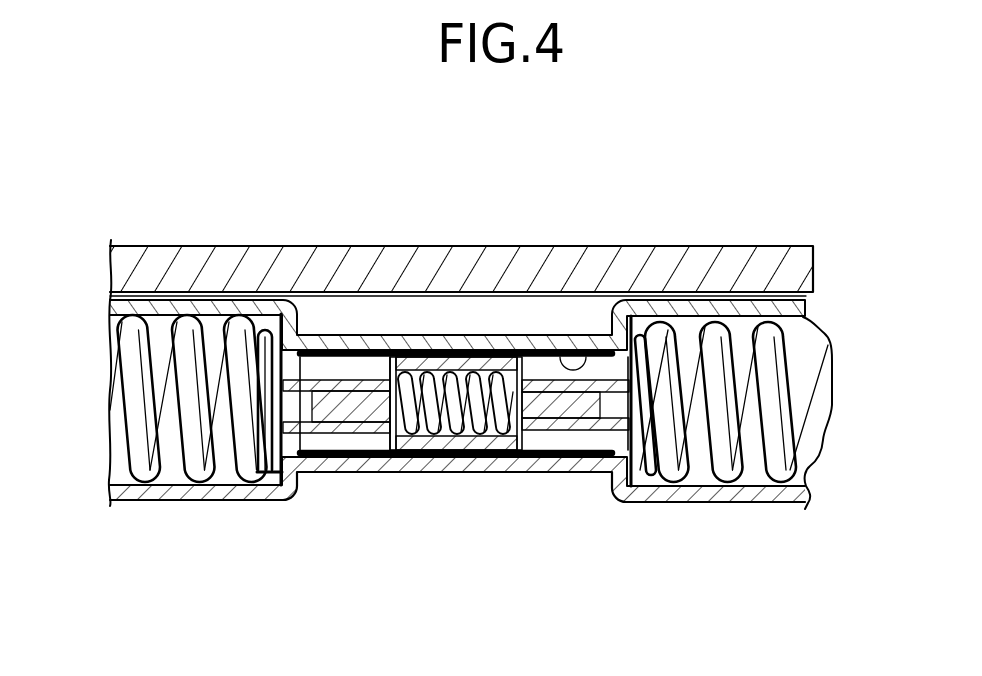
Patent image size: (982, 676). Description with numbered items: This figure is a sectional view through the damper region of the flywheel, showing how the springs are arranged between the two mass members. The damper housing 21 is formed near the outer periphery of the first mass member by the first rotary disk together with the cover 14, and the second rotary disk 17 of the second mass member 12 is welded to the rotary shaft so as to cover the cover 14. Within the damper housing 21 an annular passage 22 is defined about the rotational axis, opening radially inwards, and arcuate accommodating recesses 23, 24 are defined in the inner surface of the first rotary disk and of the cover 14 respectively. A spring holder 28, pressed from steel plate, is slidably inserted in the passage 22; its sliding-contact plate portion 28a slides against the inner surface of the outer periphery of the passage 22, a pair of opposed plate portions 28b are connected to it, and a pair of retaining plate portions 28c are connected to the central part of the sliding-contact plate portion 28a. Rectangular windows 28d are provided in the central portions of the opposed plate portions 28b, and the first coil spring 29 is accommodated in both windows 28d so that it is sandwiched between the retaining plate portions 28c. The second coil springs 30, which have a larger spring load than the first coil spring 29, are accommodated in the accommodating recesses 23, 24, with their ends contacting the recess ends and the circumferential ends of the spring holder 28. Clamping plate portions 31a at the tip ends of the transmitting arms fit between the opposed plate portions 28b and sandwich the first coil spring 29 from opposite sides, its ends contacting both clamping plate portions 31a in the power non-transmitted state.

The second mass member 12 is at (478, 247).
The cover 14 is at (737, 307).
The second rotary disk 17 is at (362, 262).
The damper housing 21 is at (255, 521).
The annular passage 22 is at (606, 341).
The accommodating recesses 23 is at (197, 490).
The accommodating recesses 24 is at (212, 327).
The spring holder 28 is at (442, 338).
The sliding-contact plate portion 28a is at (700, 318).
The opposed plate portions 28b is at (300, 333).
The retaining plate portions 28c is at (492, 356).
The rectangular windows 28d is at (417, 345).
The first coil spring 29 is at (429, 468).
The second coil springs 30 is at (143, 467).
The clamping plate portions 31a is at (362, 443).